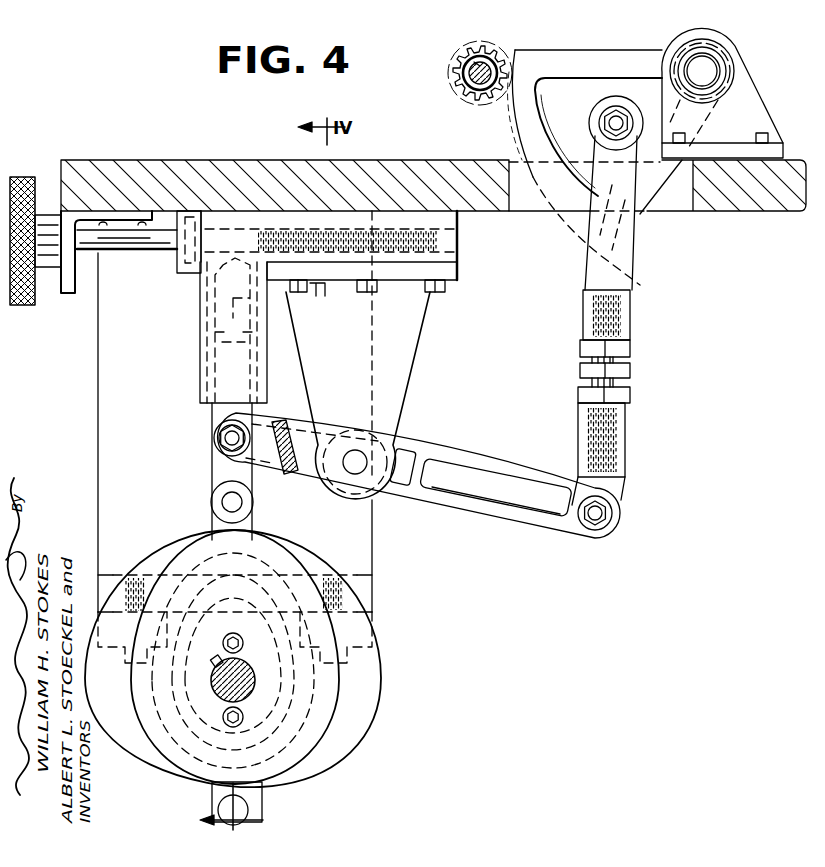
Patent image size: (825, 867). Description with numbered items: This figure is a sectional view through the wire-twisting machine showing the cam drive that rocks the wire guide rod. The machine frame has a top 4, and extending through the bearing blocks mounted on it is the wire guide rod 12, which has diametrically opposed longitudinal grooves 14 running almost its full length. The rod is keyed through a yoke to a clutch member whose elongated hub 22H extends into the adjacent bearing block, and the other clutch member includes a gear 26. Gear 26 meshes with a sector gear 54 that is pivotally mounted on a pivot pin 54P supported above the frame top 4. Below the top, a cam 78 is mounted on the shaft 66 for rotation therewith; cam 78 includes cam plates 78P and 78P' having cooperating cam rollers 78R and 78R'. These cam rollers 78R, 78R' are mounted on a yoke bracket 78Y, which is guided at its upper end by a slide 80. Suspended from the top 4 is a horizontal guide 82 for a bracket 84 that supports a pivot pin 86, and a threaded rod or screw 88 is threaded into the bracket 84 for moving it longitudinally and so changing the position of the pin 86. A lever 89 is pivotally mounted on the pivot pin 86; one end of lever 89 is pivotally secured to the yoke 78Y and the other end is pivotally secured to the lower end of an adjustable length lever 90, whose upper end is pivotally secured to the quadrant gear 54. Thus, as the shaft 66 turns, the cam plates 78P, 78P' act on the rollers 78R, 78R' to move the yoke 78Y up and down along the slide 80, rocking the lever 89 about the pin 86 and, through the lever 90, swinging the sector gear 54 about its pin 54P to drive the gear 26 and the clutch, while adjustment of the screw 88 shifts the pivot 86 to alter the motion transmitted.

The top 4 is at (383, 168).
The wire guide rod 12 is at (500, 62).
The longitudinal grooves 14 is at (485, 60).
The gear 26 is at (457, 62).
The elongated hub 22H is at (465, 90).
The sector gear 54 is at (590, 52).
The pivot pin 54P is at (712, 72).
The horizontal guide 82 is at (440, 253).
The threaded rod or screw 88 is at (147, 247).
The slide 80 is at (214, 357).
The bracket 84 is at (412, 348).
The pivot pin 86 is at (351, 471).
The lever 89 is at (463, 514).
The adjustable length lever 90 is at (620, 446).
The yoke bracket 78Y is at (220, 462).
The cam roller 78R is at (200, 502).
The shaft 66 is at (245, 665).
The cam plate 78P' is at (259, 658).
The cam plate 78P is at (279, 657).
The cam 78 is at (338, 759).
The cam roller 78R' is at (257, 807).